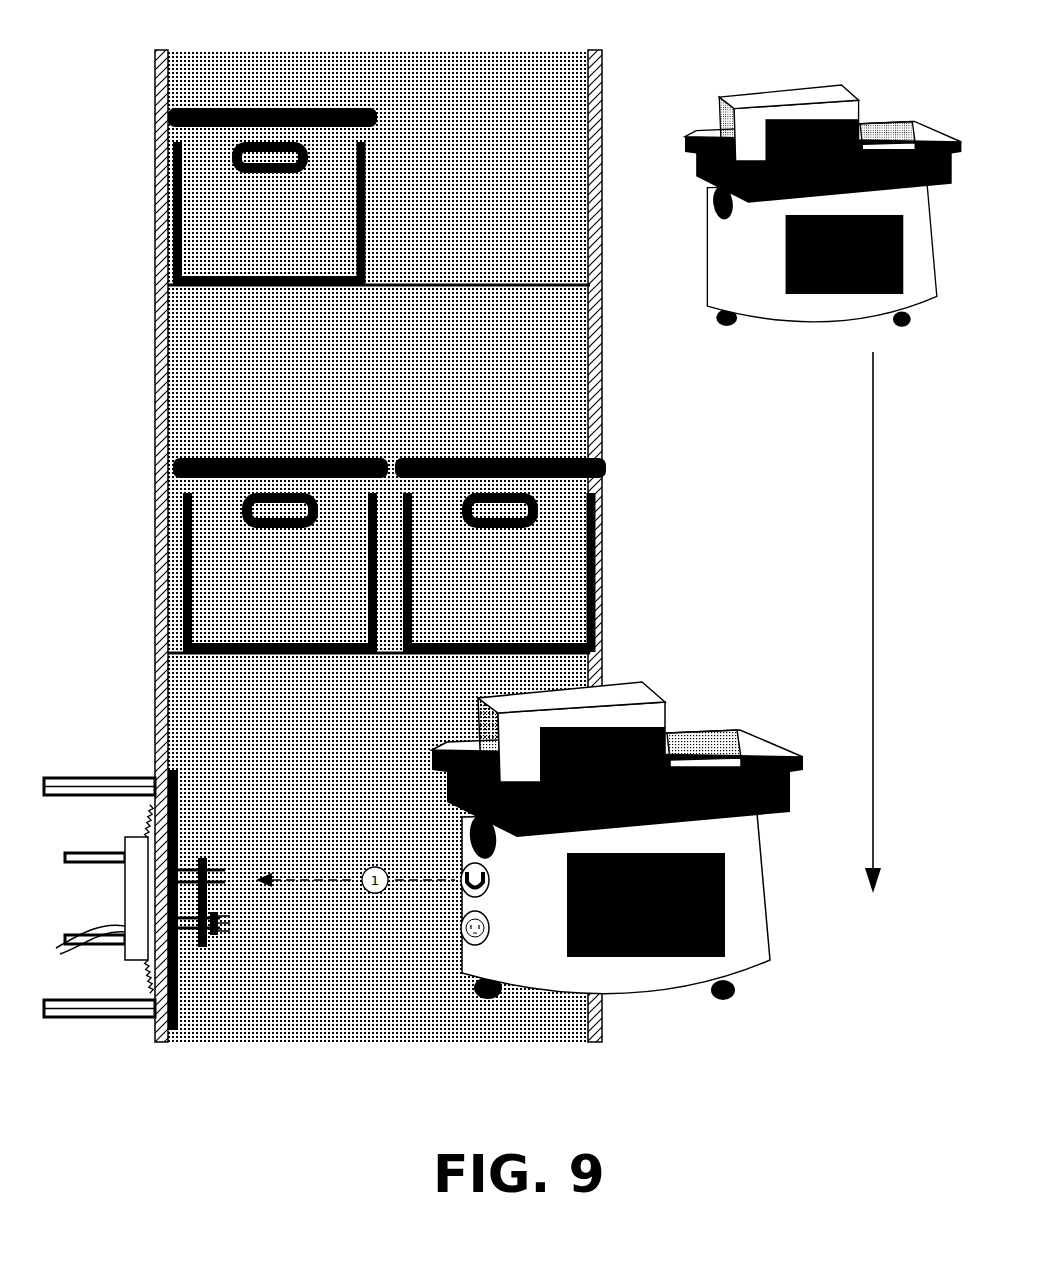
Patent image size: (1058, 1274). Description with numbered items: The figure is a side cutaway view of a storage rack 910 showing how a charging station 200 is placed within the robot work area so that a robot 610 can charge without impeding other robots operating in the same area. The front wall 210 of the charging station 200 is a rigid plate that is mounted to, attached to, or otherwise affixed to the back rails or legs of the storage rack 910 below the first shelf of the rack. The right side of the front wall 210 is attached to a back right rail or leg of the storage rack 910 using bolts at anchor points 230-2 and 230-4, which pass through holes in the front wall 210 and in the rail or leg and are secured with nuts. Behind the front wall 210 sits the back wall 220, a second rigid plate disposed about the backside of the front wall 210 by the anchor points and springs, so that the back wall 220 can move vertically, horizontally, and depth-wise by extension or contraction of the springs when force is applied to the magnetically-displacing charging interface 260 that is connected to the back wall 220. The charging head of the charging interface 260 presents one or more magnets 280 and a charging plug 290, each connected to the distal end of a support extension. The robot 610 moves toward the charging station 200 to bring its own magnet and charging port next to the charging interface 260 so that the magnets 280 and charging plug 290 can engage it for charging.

The charging station 200 is at (177, 880).
The front wall 210 is at (178, 777).
The back wall 220 is at (132, 907).
The anchor point 230-2 is at (108, 788).
The anchor point 230-4 is at (103, 1012).
The magnetically-displacing charging interface 260 is at (214, 848).
The magnet 280 is at (227, 870).
The charging plug 290 is at (223, 932).
The robot 610 is at (720, 732).
The storage rack 910 is at (599, 50).